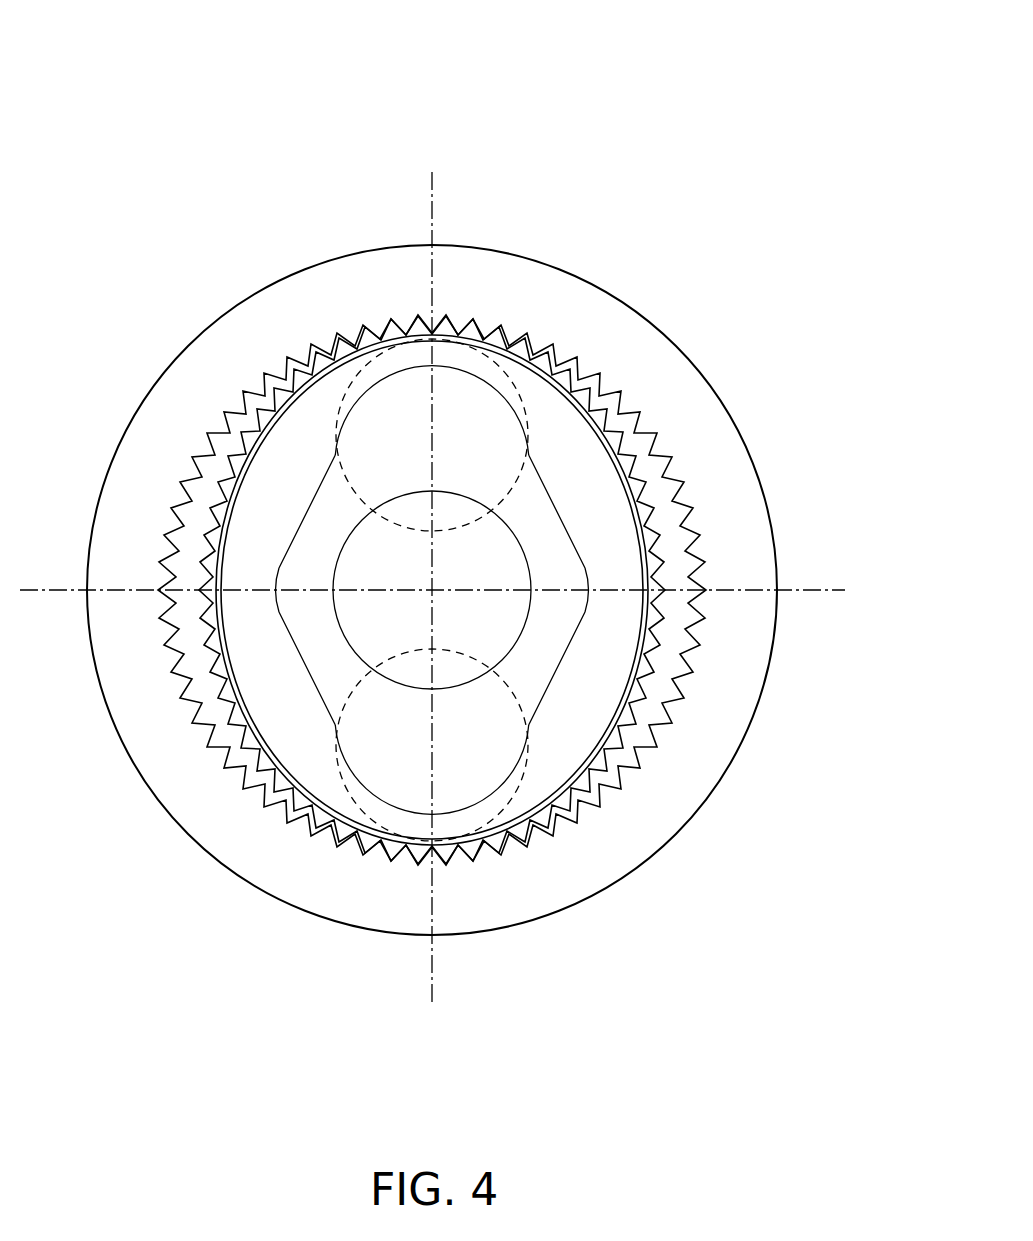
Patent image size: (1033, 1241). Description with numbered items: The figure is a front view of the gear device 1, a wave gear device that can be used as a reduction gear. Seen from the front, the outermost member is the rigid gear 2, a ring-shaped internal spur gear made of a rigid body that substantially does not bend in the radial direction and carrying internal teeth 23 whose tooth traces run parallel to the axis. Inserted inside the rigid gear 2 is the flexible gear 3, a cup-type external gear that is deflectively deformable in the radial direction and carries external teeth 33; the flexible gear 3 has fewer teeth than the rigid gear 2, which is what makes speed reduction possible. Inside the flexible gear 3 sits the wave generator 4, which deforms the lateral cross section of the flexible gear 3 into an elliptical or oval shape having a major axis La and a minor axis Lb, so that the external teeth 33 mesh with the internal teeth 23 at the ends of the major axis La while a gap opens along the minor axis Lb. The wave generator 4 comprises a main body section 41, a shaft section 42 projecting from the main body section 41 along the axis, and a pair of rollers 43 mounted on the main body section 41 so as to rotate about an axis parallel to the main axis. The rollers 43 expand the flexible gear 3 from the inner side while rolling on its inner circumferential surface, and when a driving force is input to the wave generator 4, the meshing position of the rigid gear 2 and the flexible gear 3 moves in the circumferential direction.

The gear device 1 is at (650, 133).
The rigid gear 2 is at (633, 308).
The flexible gear 3 is at (660, 509).
The wave generator 4 is at (303, 682).
The internal teeth 23 is at (690, 641).
The external teeth 33 is at (668, 706).
The main body section 41 is at (310, 483).
The shaft section 42 is at (333, 555).
The rollers 43 is at (352, 386).
The major axis La is at (432, 192).
The minor axis Lb is at (810, 591).